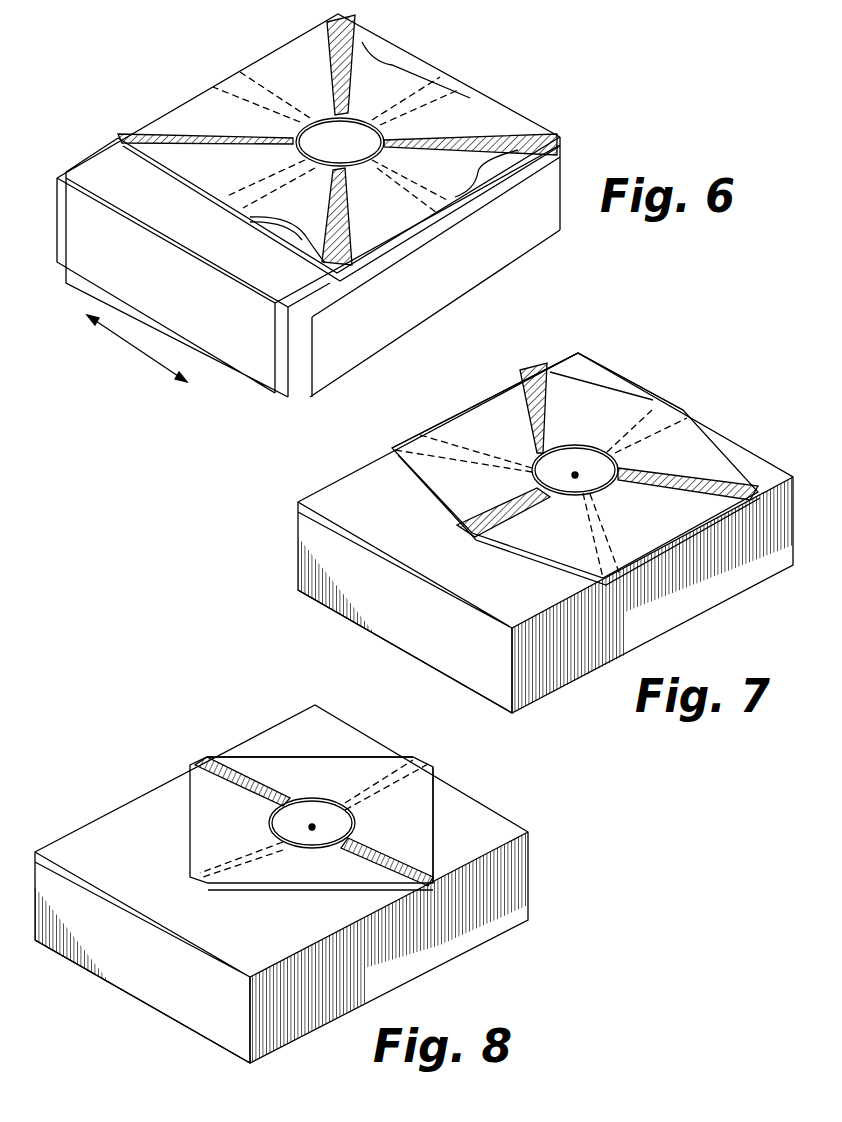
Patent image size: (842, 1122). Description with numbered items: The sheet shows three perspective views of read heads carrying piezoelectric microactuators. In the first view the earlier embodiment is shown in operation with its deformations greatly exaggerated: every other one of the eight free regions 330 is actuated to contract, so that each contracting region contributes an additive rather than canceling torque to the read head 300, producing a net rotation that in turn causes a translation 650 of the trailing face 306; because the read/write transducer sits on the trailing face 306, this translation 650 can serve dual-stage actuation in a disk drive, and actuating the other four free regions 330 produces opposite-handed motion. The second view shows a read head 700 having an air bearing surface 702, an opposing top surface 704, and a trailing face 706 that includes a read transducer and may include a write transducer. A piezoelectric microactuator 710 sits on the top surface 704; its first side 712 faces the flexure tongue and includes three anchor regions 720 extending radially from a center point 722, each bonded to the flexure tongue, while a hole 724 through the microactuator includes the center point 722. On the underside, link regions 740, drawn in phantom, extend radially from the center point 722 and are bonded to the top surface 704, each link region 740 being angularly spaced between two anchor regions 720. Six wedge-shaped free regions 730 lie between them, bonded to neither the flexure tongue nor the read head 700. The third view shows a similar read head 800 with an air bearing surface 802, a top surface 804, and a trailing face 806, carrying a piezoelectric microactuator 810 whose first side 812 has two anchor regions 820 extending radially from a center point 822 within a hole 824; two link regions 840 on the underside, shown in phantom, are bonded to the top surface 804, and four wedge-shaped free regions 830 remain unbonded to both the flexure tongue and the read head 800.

In FIG. 6, the read head 300 is at (452, 273).
In FIG. 6, the trailing face 306 is at (258, 360).
In FIG. 6, the free regions 330 is at (303, 53).
In FIG. 6, the translation 650 is at (130, 340).
In FIG. 7, the read head 700 is at (565, 678).
In FIG. 7, the air bearing surface 702 is at (683, 625).
In FIG. 7, the top surface 704 is at (340, 495).
In FIG. 7, the trailing face 706 is at (433, 653).
In FIG. 7, the piezoelectric microactuator 710 is at (575, 383).
In FIG. 7, the first side 712 is at (603, 395).
In FIG. 7, the anchor regions 720 is at (535, 367).
In FIG. 7, the center point 722 is at (535, 460).
In FIG. 7, the hole 724 is at (575, 475).
In FIG. 7, the free regions 730 is at (637, 408).
In FIG. 7, the link regions 740 is at (677, 417).
In FIG. 8, the read head 800 is at (388, 968).
In FIG. 8, the air bearing surface 802 is at (502, 932).
In FIG. 8, the top surface 804 is at (80, 840).
In FIG. 8, the trailing face 806 is at (128, 977).
In FIG. 8, the piezoelectric microactuator 810 is at (420, 790).
In FIG. 8, the first side 812 is at (420, 823).
In FIG. 8, the anchor regions 820 is at (202, 758).
In FIG. 8, the center point 822 is at (312, 825).
In FIG. 8, the hole 824 is at (293, 807).
In FIG. 8, the free regions 830 is at (200, 790).
In FIG. 8, the link regions 840 is at (423, 760).